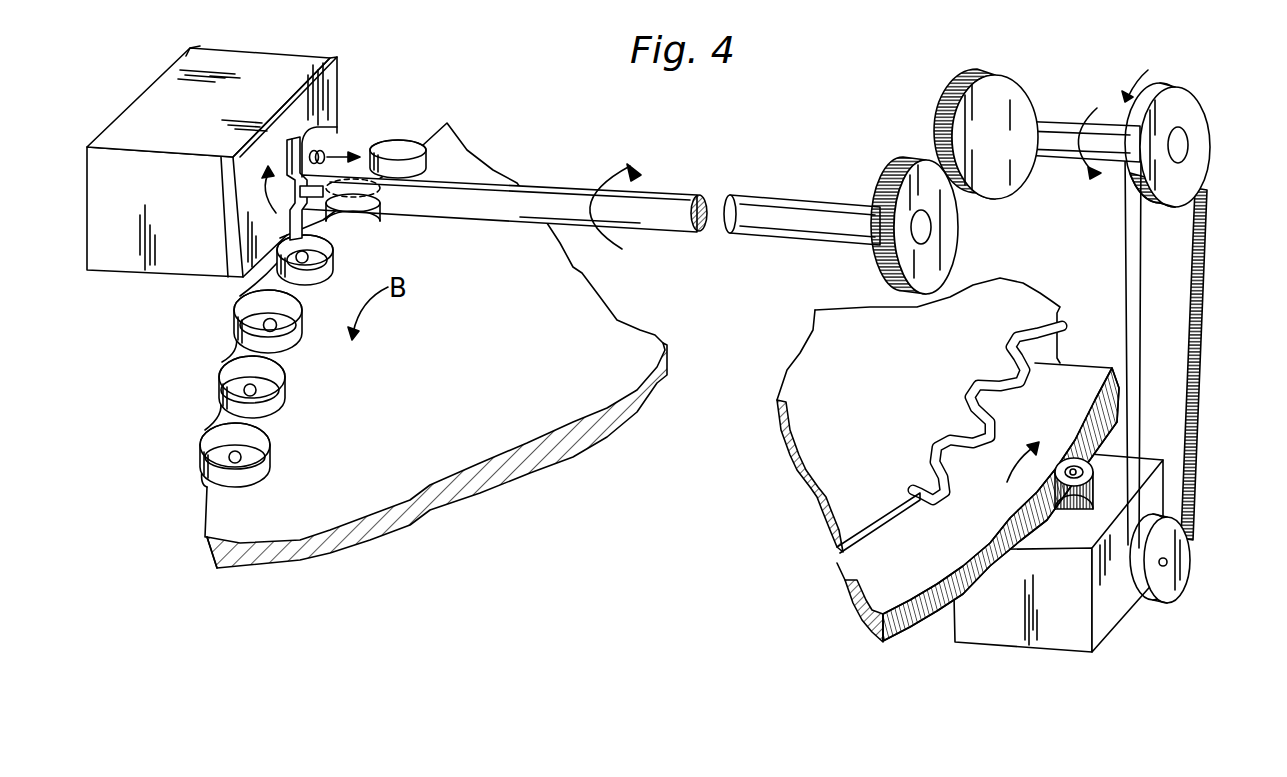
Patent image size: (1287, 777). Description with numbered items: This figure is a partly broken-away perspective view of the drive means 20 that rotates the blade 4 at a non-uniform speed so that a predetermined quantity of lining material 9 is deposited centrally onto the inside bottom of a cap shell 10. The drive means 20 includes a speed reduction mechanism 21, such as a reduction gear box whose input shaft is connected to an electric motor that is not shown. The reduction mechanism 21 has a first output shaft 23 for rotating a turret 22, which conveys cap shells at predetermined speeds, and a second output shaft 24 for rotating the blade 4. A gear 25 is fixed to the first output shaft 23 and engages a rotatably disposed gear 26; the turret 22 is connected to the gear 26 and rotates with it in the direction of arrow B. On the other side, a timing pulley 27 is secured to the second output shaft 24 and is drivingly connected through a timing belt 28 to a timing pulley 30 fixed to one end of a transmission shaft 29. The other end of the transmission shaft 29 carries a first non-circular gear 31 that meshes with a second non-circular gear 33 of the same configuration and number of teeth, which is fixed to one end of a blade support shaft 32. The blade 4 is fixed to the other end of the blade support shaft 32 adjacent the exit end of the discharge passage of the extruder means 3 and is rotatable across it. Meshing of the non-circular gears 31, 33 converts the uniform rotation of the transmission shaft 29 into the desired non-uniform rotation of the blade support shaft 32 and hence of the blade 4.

The extruder means 3 is at (123, 258).
The blade 4 is at (305, 137).
The lining material 9 is at (300, 256).
The cap shell 10 is at (317, 280).
The drive means 20 is at (1146, 71).
The speed reduction mechanism 21 is at (1075, 645).
The turret 22 is at (887, 493).
The first output shaft 23 is at (1069, 466).
The second output shaft 24 is at (1163, 567).
The gear 25 is at (1045, 485).
The gear 26 is at (890, 597).
The timing pulley 27 is at (1187, 570).
The timing belt 28 is at (1200, 430).
The transmission shaft 29 is at (1058, 132).
The timing pulley 30 is at (1190, 102).
The first non-circular gear 31 is at (963, 103).
The blade support shaft 32 is at (763, 228).
The second non-circular gear 33 is at (943, 255).